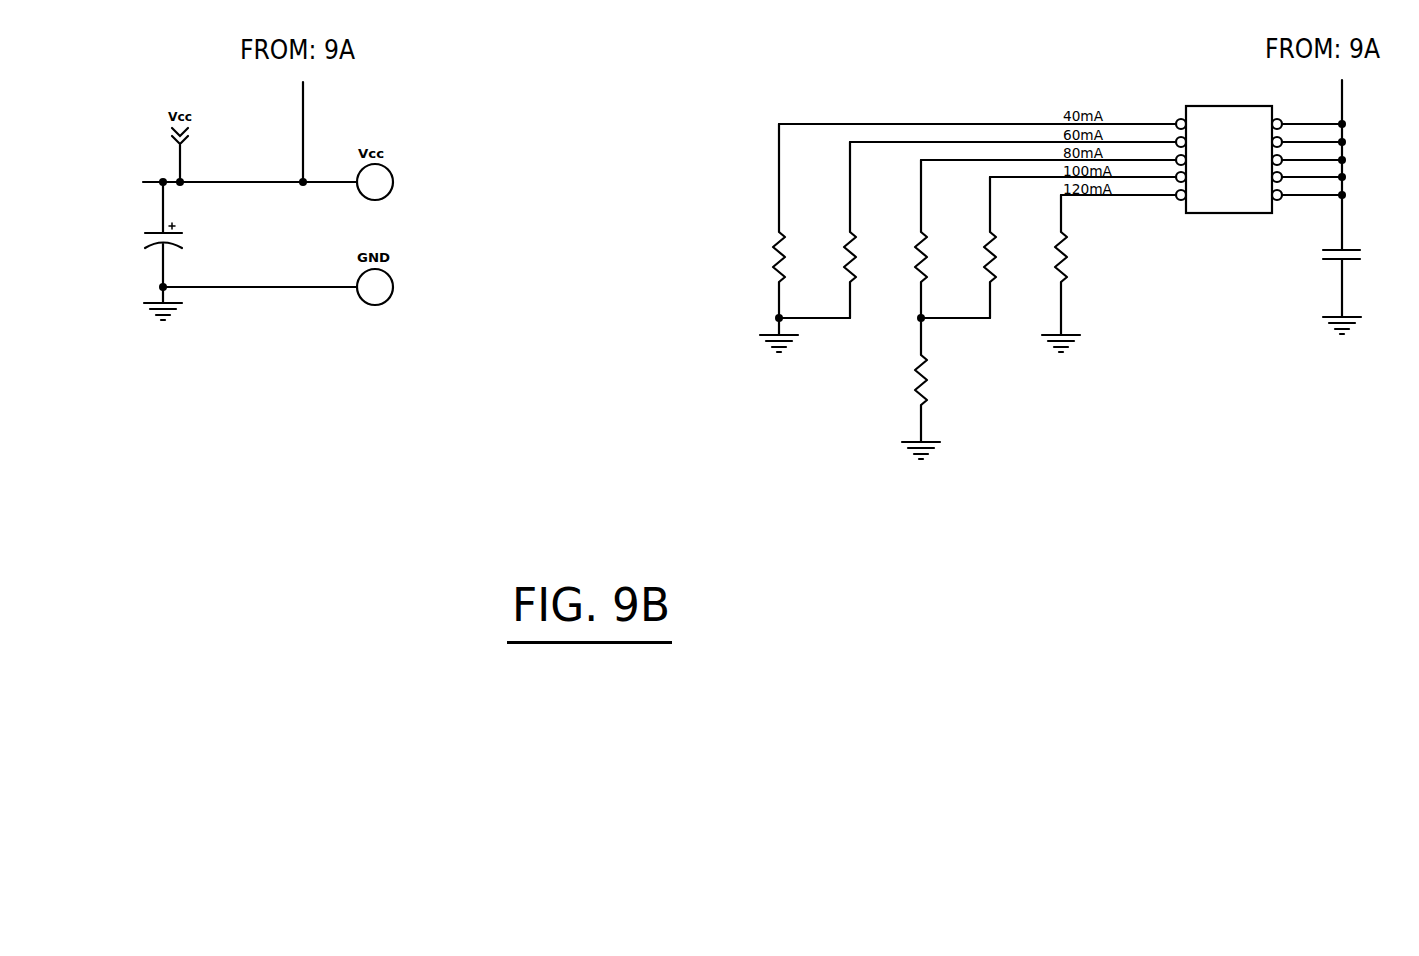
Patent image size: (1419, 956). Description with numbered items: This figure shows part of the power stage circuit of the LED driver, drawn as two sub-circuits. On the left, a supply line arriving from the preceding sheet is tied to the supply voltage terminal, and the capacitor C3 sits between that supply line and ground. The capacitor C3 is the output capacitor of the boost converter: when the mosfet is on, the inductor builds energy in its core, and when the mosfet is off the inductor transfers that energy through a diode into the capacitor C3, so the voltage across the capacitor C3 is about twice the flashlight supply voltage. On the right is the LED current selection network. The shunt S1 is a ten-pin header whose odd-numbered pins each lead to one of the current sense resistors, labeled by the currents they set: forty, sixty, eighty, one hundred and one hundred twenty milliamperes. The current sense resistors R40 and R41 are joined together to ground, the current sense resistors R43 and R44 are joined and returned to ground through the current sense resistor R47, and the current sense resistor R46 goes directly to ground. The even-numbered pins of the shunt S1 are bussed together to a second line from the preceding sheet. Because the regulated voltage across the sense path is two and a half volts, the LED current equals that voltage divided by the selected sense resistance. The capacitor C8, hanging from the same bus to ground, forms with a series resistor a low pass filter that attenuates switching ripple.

The capacitor C3 is at (181, 251).
The current sense resistor R40 is at (763, 238).
The current sense resistor R41 is at (827, 230).
The current sense resistor R43 is at (941, 257).
The current sense resistor R44 is at (1010, 247).
The current sense resistor R46 is at (1075, 273).
The current sense resistor R47 is at (933, 407).
The shunt S1 is at (1229, 149).
The capacitor C8 is at (1360, 282).